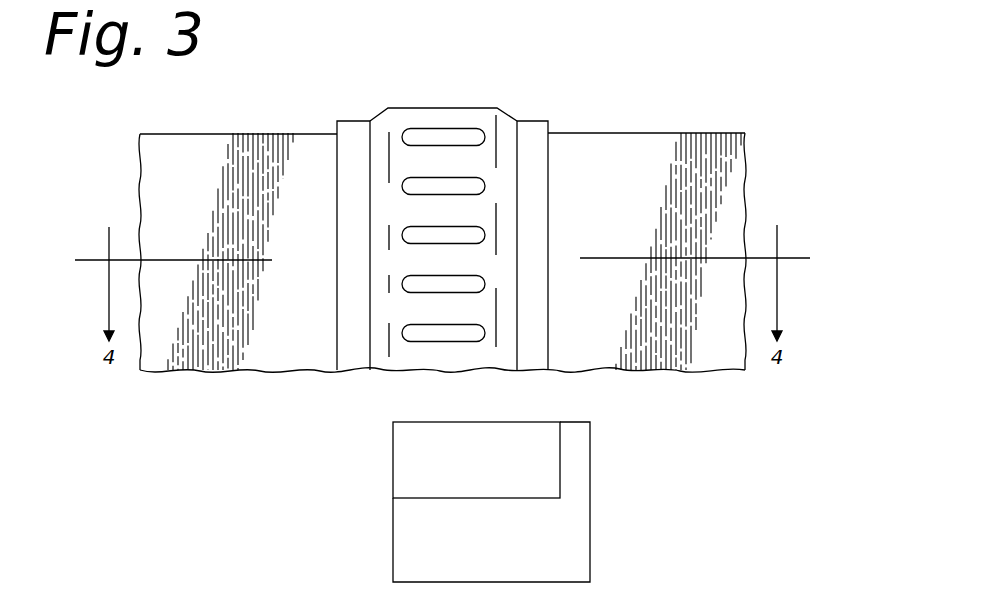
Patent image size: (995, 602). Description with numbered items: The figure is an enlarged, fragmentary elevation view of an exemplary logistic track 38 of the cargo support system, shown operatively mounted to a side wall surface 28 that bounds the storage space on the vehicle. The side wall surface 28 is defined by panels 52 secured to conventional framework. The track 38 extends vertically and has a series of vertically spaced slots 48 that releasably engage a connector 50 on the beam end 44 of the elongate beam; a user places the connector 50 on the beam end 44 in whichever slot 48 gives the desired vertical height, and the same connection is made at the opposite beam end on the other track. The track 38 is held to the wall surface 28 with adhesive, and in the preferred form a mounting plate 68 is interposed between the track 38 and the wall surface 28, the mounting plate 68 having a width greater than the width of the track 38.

The side wall surface 28 is at (172, 223).
The first logistic track 38 is at (449, 223).
The beam end 44 is at (485, 567).
The slots 48 is at (413, 285).
The connector 50 is at (472, 342).
The panel 52 is at (633, 168).
The mounting plate 68 is at (522, 185).